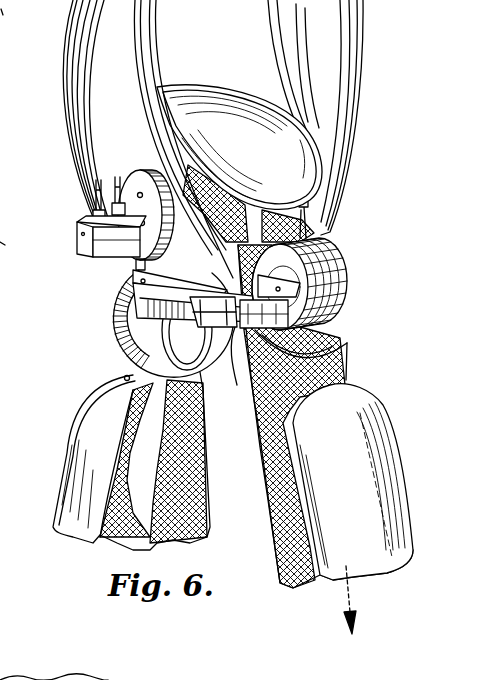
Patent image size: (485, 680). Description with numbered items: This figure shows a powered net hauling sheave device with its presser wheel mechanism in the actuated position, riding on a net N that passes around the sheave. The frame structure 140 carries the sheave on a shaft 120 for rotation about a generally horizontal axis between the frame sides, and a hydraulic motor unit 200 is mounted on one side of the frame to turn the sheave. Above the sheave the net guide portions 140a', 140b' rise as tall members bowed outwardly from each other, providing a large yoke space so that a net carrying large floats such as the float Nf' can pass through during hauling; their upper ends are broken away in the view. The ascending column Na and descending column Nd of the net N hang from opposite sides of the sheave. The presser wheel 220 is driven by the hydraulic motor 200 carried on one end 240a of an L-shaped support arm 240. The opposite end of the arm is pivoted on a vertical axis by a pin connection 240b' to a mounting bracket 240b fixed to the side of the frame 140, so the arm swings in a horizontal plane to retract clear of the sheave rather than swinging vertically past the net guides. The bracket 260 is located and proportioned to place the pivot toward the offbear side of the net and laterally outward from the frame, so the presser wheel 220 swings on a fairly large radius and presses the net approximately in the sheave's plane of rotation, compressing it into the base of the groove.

The frame structure 140 is at (324, 228).
The net guide portion 140a' is at (346, 119).
The net guide portion 140b' is at (148, 139).
The hydraulic motor unit 200 is at (110, 240).
The shaft 120 is at (133, 282).
The presser wheel 220 is at (344, 267).
The L-shaped support arm 240 is at (213, 327).
The end of support arm 240a is at (345, 323).
The mounting bracket 240b is at (139, 336).
The pin connection 240b' is at (131, 302).
The bracket 260 is at (322, 350).
The net N is at (275, 536).
The ascending column of net Na is at (155, 498).
The descending column of net Nd is at (295, 400).
The float Nf' is at (353, 461).